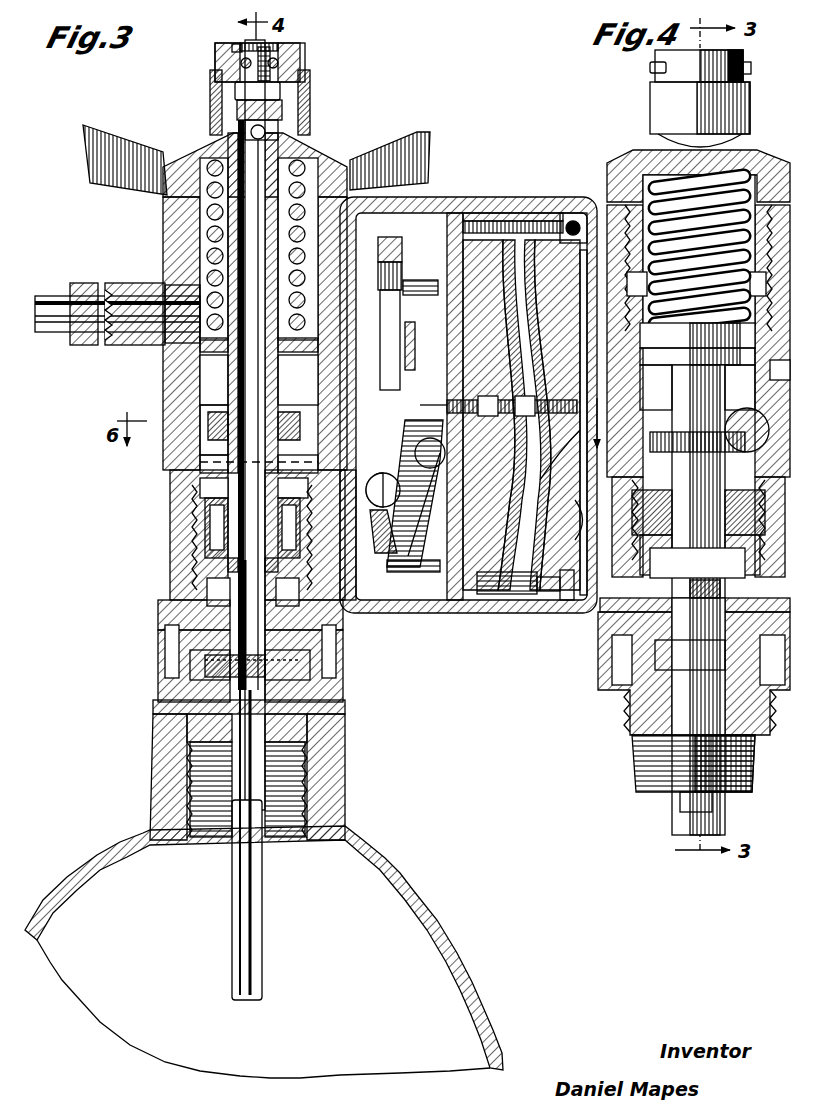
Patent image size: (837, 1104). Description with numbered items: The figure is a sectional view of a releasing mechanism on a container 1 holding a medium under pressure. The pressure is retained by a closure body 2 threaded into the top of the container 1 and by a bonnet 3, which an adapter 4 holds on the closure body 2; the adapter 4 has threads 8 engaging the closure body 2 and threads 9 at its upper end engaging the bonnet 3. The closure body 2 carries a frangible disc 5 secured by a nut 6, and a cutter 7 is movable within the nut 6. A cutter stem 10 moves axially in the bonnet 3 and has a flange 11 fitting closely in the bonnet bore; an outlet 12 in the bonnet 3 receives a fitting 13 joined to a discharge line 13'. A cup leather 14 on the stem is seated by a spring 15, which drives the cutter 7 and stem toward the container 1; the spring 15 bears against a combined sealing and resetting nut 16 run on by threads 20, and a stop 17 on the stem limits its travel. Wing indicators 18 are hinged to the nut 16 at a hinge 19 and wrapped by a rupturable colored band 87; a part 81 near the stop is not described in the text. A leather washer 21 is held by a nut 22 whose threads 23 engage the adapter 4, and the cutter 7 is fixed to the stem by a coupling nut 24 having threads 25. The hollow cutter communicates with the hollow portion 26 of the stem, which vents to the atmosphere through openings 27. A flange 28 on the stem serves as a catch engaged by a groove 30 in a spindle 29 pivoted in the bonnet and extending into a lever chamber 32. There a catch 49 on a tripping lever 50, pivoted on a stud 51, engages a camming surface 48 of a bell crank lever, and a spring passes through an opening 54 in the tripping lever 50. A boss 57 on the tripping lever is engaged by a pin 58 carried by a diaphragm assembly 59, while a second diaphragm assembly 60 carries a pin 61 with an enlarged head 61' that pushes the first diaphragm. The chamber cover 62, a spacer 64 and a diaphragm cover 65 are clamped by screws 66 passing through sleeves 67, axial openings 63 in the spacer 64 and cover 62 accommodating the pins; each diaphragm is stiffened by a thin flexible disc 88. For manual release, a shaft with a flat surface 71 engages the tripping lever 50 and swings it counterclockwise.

In FIG. 3, the container 1 is at (78, 868).
In FIG. 3, the closure body 2 is at (185, 683).
In FIG. 4, the closure body 2 is at (748, 722).
In FIG. 3, the bonnet 3 is at (200, 470).
In FIG. 3, the adapter 4 is at (205, 575).
In FIG. 4, the adapter 4 is at (745, 604).
In FIG. 3, the frangible disc 5 is at (190, 716).
In FIG. 3, the nut 6 is at (180, 663).
In FIG. 4, the nut 6 is at (640, 690).
In FIG. 3, the cutter 7 is at (178, 643).
In FIG. 3, the threads 8 is at (180, 622).
In FIG. 3, the threads 9 is at (195, 527).
In FIG. 3, the cutter stem 10 is at (205, 507).
In FIG. 3, the flange 11 is at (210, 355).
In FIG. 4, the flange 11 is at (697, 387).
In FIG. 3, the outlet 12 is at (160, 350).
In FIG. 3, the fitting 13 is at (90, 333).
In FIG. 3, the discharge line 13' is at (116, 299).
In FIG. 3, the cup leather 14 is at (215, 372).
In FIG. 4, the cup leather 14 is at (697, 579).
In FIG. 3, the spring 15 is at (200, 268).
In FIG. 4, the spring 15 is at (696, 261).
In FIG. 3, the combined sealing and resetting nut 16 is at (195, 148).
In FIG. 4, the combined sealing and resetting nut 16 is at (750, 148).
In FIG. 3, the stop 17 is at (304, 46).
In FIG. 4, the stop 17 is at (752, 64).
In FIG. 3, the wing indicators 18 is at (305, 66).
In FIG. 4, the wing indicators 18 is at (748, 103).
In FIG. 3, the hinge 19 is at (240, 45).
In FIG. 4, the hinge 19 is at (650, 68).
In FIG. 3, the threads 20 is at (185, 232).
In FIG. 3, the leather washer 21 is at (205, 540).
In FIG. 4, the leather washer 21 is at (748, 508).
In FIG. 3, the nut 22 is at (215, 590).
In FIG. 3, the threads 23 is at (218, 556).
In FIG. 3, the coupling nut 24 is at (190, 606).
In FIG. 4, the coupling nut 24 is at (724, 556).
In FIG. 3, the threads 25 is at (355, 553).
In FIG. 3, the hollow portion 26 is at (200, 490).
In FIG. 3, the openings 27 is at (283, 133).
In FIG. 3, the flange 28 is at (200, 455).
In FIG. 4, the flange 28 is at (695, 431).
In FIG. 4, the spindle 29 is at (760, 445).
In FIG. 4, the groove 30 is at (789, 377).
In FIG. 3, the lever chamber 32 is at (428, 200).
In FIG. 3, the camming surface 48 is at (388, 554).
In FIG. 3, the catch 49 is at (406, 583).
In FIG. 3, the tripping lever 50 is at (413, 574).
In FIG. 3, the stud 51 is at (419, 493).
In FIG. 3, the opening in the tripping lever 54 is at (408, 313).
In FIG. 3, the boss 57 is at (496, 432).
In FIG. 3, the pin 58 is at (430, 372).
In FIG. 3, the diaphragm assembly 59 is at (500, 600).
In FIG. 3, the diaphragm assembly 60 is at (572, 213).
In FIG. 3, the pin 61 is at (552, 415).
In FIG. 3, the enlarged head 61' is at (597, 422).
In FIG. 4, the enlarged head 61' is at (606, 377).
In FIG. 3, the cover 62 is at (492, 212).
In FIG. 3, the axial openings 63 is at (590, 486).
In FIG. 4, the axial openings 63 is at (599, 493).
In FIG. 3, the spacer 64 is at (522, 212).
In FIG. 3, the diaphragm cover 65 is at (575, 530).
In FIG. 4, the diaphragm cover 65 is at (605, 551).
In FIG. 3, the screws 66 is at (570, 600).
In FIG. 3, the sleeves 67 is at (528, 600).
In FIG. 3, the flat surface 71 is at (381, 489).
In FIG. 3, the plug 81 is at (230, 97).
In FIG. 3, the band 87 is at (312, 100).
In FIG. 4, the band 87 is at (650, 120).
In FIG. 3, the thin disc of flexible material 88 is at (478, 330).